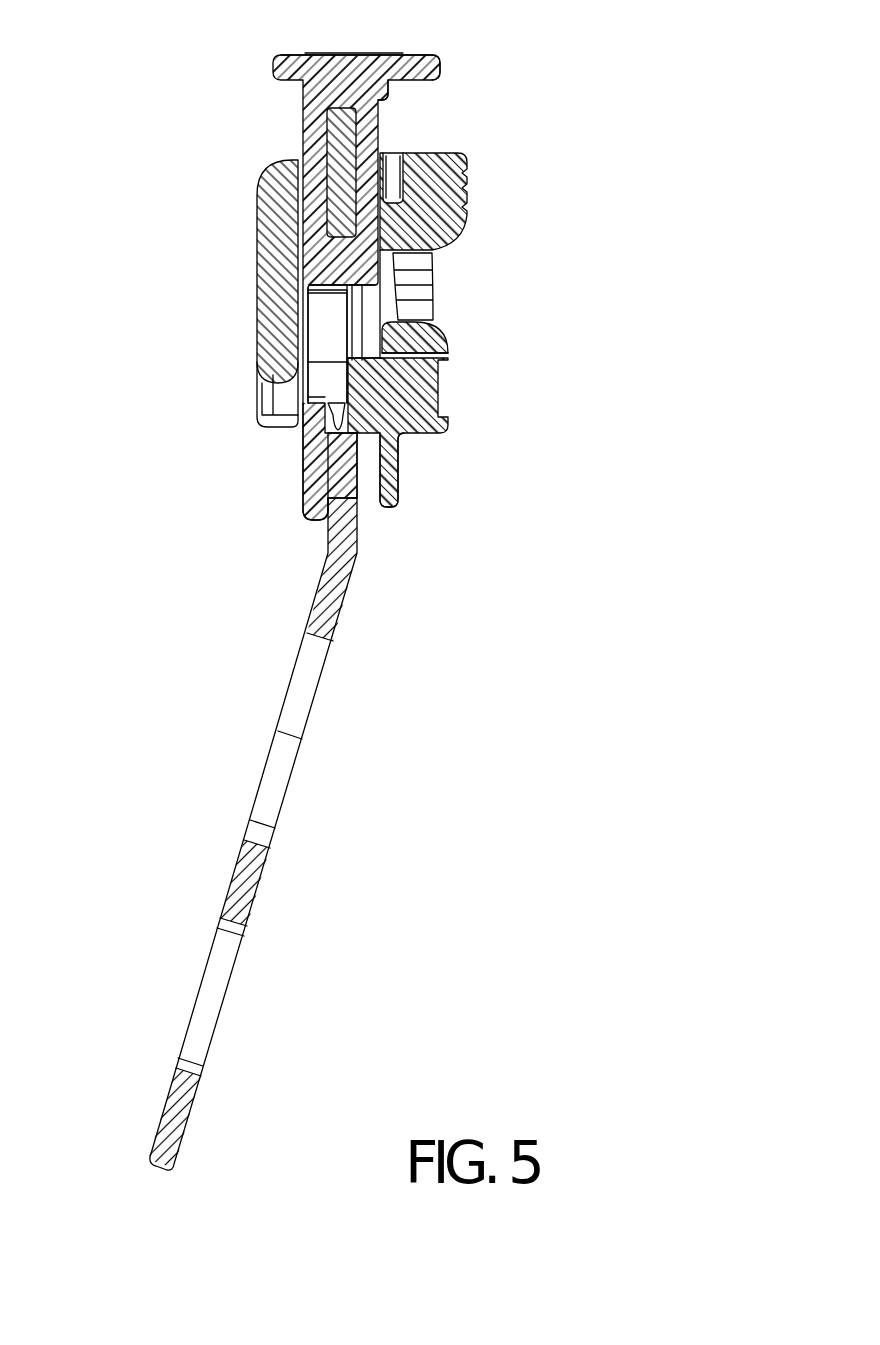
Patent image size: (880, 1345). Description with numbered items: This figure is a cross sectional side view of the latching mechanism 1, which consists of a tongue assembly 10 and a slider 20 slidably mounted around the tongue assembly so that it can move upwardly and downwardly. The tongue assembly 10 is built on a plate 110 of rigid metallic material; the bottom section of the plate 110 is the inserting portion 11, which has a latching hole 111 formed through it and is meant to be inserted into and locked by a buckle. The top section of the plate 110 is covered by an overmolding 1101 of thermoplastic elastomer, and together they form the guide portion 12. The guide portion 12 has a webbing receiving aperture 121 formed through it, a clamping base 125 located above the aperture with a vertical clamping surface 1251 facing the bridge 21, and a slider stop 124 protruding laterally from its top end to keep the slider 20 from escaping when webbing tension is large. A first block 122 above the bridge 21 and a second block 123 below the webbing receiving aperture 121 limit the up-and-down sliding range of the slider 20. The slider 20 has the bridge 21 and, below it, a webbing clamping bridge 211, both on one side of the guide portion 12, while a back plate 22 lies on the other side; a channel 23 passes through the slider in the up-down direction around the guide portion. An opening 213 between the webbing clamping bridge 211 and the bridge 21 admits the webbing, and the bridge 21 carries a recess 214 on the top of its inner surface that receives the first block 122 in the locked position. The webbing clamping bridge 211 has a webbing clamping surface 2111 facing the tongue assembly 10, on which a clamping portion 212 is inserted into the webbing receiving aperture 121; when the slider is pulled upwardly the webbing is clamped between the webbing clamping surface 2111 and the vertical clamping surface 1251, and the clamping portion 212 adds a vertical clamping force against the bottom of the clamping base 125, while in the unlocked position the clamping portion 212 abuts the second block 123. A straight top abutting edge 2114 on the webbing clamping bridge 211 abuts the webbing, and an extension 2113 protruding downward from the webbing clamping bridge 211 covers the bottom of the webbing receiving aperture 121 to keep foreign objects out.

The latching mechanism 1 is at (135, 82).
The tongue assembly 10 is at (343, 713).
The inserting portion 11 is at (222, 868).
The plate 110 is at (248, 875).
The latching hole 111 is at (193, 1066).
The guide portion 12 is at (295, 112).
The overmolding 1101 is at (332, 82).
The slider stop 124 is at (410, 63).
The first block 122 is at (385, 95).
The clamping base 125 is at (338, 278).
The vertical clamping surface 1251 is at (386, 294).
The webbing receiving aperture 121 is at (303, 410).
The second block 123 is at (335, 347).
The slider 20 is at (240, 388).
The bridge 21 is at (440, 192).
The back plate 22 is at (268, 307).
The channel 23 is at (313, 203).
The recess 214 is at (392, 170).
The opening 213 is at (408, 272).
The top abutting edge 2114 is at (385, 326).
The webbing clamping surface 2111 is at (372, 338).
The clamping portion 212 is at (365, 368).
The webbing clamping bridge 211 is at (430, 398).
The extension 2113 is at (389, 498).